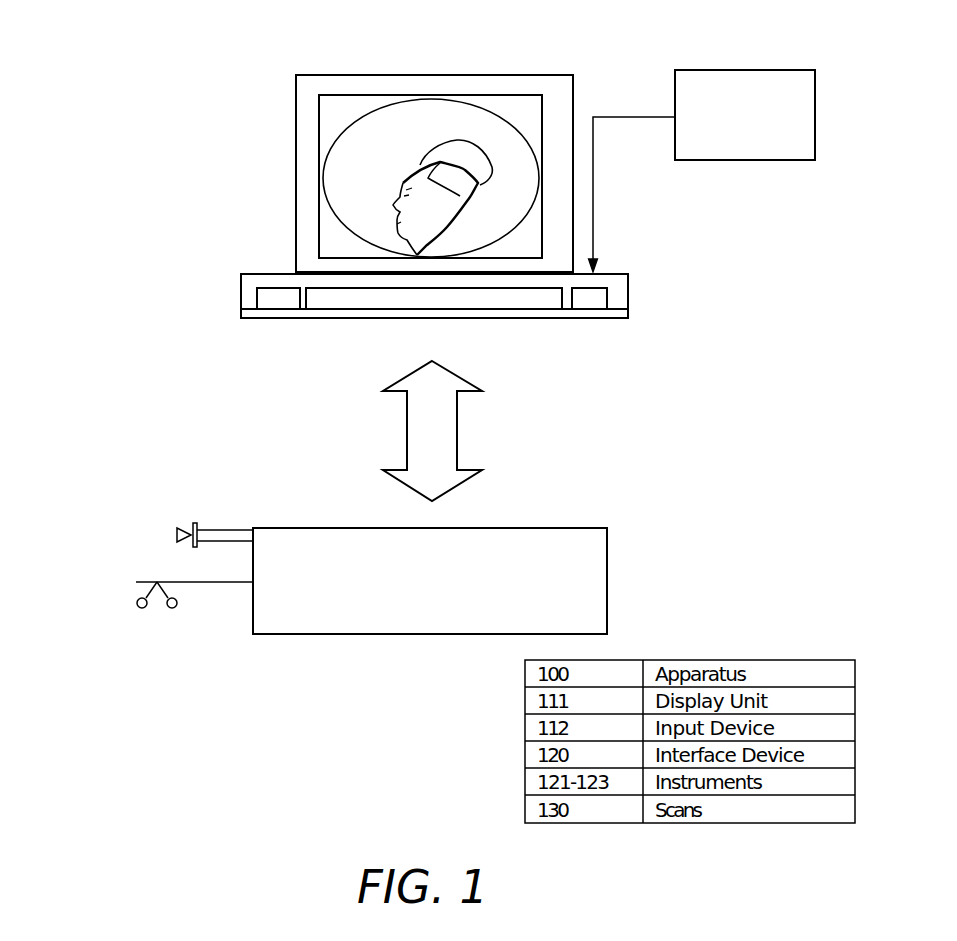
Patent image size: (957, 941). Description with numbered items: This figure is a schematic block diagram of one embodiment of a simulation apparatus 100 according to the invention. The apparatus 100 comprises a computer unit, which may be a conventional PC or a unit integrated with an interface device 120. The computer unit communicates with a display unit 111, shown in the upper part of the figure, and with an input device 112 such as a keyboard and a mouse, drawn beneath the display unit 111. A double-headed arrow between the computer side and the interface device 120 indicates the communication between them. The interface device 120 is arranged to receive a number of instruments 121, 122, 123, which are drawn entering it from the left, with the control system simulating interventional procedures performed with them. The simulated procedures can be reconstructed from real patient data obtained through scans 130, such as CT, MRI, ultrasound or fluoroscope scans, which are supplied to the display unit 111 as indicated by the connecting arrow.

The apparatus 100 is at (112, 73).
The display unit 111 is at (250, 118).
The input device 112 is at (223, 282).
The interface device 120 is at (620, 518).
The instrument 121 is at (188, 522).
The instrument 122 is at (142, 582).
The instrument 123 is at (157, 609).
The scans 130 is at (702, 171).